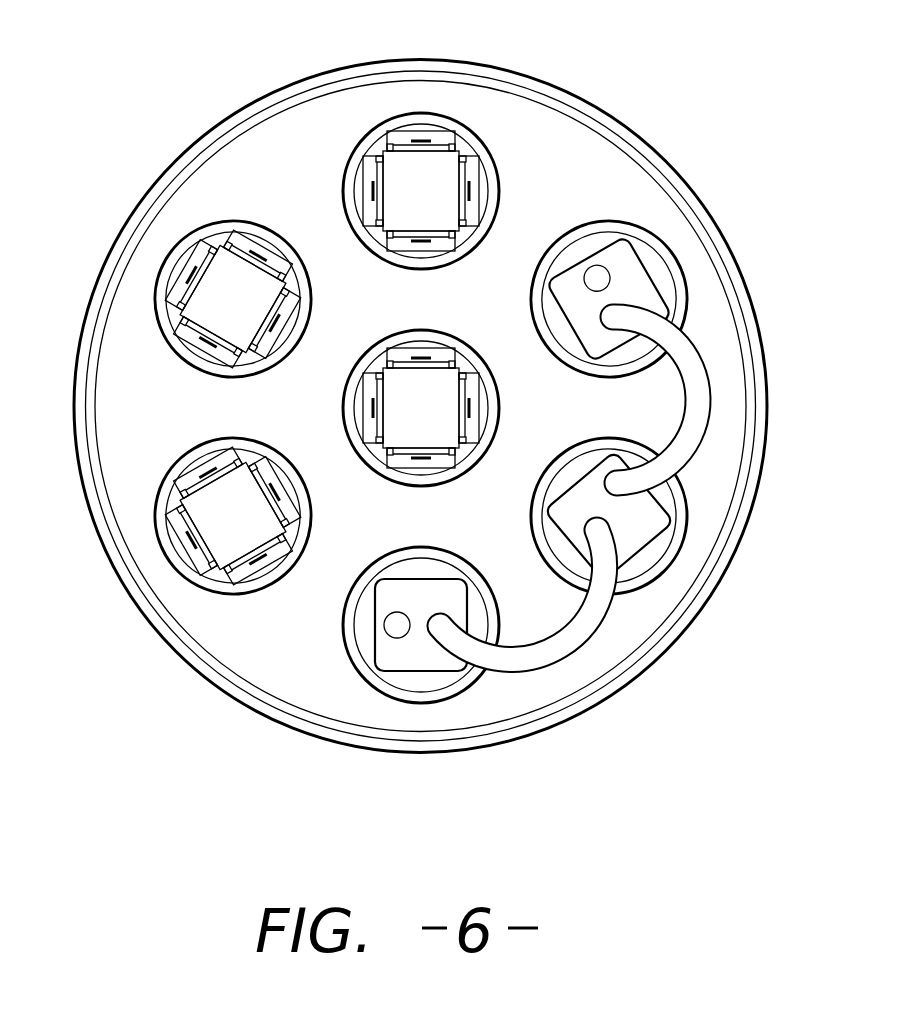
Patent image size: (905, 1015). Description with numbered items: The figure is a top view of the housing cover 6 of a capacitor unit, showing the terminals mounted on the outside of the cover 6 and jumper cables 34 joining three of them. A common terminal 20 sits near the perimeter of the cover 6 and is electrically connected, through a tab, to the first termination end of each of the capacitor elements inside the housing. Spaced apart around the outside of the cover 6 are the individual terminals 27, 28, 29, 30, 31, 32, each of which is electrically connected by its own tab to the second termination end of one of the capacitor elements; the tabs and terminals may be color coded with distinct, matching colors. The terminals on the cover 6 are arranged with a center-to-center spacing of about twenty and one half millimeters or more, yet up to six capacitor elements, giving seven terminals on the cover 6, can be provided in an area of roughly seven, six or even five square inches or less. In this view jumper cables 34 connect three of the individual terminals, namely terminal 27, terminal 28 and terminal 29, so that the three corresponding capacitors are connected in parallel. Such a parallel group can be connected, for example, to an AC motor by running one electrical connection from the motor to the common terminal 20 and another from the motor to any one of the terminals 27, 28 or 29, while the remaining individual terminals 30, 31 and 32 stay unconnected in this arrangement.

The cover 6 is at (258, 648).
The common terminal 20 is at (405, 173).
The individual terminal 27 is at (648, 552).
The individual terminal 28 is at (397, 648).
The individual terminal 29 is at (657, 275).
The individual terminal 30 is at (422, 395).
The individual terminal 31 is at (213, 533).
The individual terminal 32 is at (213, 290).
The jumper cables 34 is at (693, 390).